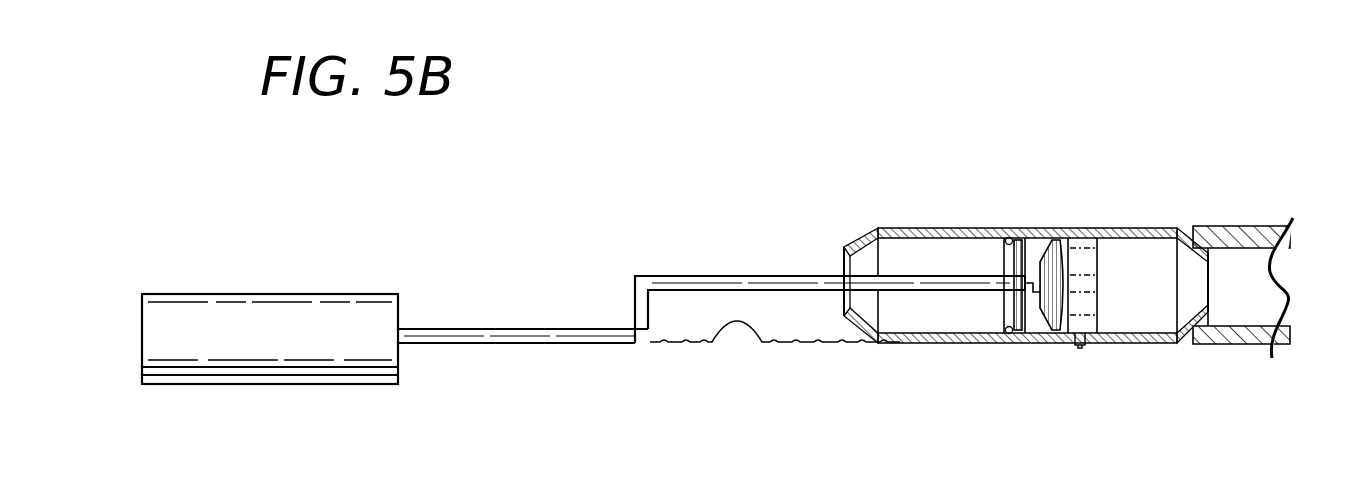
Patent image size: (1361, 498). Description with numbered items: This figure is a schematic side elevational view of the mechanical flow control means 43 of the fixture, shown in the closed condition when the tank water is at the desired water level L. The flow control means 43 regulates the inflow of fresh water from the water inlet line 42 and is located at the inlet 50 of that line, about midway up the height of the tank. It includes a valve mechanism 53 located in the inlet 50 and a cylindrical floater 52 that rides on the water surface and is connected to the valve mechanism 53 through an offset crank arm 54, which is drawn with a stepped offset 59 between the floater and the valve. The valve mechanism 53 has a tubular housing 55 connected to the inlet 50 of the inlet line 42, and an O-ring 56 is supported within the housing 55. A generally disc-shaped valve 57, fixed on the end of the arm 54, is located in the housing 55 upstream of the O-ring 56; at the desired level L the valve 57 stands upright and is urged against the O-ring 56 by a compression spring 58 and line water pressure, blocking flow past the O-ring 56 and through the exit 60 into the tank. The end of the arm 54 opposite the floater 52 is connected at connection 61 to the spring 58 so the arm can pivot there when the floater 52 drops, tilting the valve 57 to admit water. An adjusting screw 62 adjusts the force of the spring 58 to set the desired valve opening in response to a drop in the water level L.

The water inlet line 42 is at (1243, 225).
The flow control means 43 is at (695, 213).
The inlet 50 is at (1212, 283).
The cylindrical floater 52 is at (200, 313).
The valve mechanism 53 is at (1115, 211).
The offset crank arm 54 is at (497, 329).
The tubular housing 55 is at (888, 343).
The O-ring 56 is at (1000, 250).
The disc-shaped valve 57 is at (1008, 298).
The compression spring 58 is at (1035, 248).
The offset bend 59 is at (633, 303).
The exit 60 is at (845, 270).
The connection 61 is at (1045, 335).
The adjusting screw 62 is at (1080, 348).
The water level L is at (712, 345).